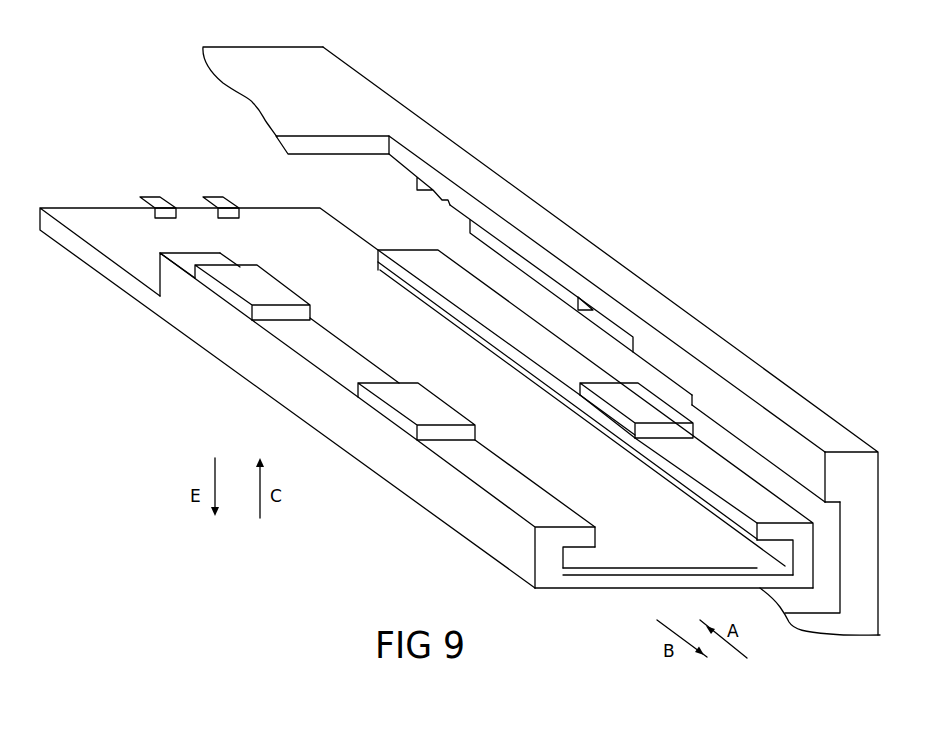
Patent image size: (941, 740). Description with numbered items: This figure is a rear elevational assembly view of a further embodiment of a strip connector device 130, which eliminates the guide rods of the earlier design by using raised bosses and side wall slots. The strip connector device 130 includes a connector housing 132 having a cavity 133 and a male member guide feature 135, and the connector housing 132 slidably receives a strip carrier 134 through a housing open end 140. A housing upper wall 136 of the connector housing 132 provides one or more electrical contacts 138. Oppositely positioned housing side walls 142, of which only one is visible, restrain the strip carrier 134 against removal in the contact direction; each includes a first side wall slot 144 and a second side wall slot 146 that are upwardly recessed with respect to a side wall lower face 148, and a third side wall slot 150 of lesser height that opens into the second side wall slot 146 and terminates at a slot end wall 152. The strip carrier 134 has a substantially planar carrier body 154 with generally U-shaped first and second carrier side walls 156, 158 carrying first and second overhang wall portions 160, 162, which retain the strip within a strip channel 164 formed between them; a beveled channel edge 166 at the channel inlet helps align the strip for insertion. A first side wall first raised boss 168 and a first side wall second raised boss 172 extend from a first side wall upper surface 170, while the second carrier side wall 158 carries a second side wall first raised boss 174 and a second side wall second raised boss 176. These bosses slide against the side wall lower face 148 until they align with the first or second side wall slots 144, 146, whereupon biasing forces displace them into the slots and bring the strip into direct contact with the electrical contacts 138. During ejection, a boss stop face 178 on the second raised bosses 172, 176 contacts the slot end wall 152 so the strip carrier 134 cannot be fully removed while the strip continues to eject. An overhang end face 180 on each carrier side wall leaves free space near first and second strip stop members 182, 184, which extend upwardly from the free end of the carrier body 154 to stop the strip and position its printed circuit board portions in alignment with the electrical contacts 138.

The strip connector device 130 is at (700, 182).
The connector housing 132 is at (578, 205).
The cavity 133 is at (382, 202).
The strip carrier 134 is at (232, 378).
The male member guide feature 135 is at (827, 557).
The housing upper wall 136 is at (300, 143).
The electrical contacts 138 is at (340, 160).
The housing open end 140 is at (866, 587).
The housing side walls 142 is at (820, 470).
The first side wall slot 144 is at (458, 250).
The second side wall slot 146 is at (594, 307).
The side wall lower face 148 is at (557, 274).
The third side wall slot 150 is at (665, 372).
The slot end wall 152 is at (705, 405).
The carrier body 154 is at (647, 583).
The first carrier side wall 156 is at (287, 331).
The second carrier side wall 158 is at (723, 487).
The first overhang wall portion 160 is at (573, 533).
The second overhang wall portion 162 is at (777, 533).
The strip channel 164 is at (680, 550).
The beveled channel edge 166 is at (627, 573).
The first side wall first raised boss 168 is at (237, 280).
The first side wall upper surface 170 is at (355, 350).
The first side wall second raised boss 172 is at (413, 412).
The second side wall first raised boss 174 is at (478, 282).
The second side wall second raised boss 176 is at (700, 398).
The boss stop face 178 is at (684, 448).
The overhang end face 180 is at (162, 240).
The first strip stop member 182 is at (152, 195).
The second strip stop member 184 is at (216, 195).